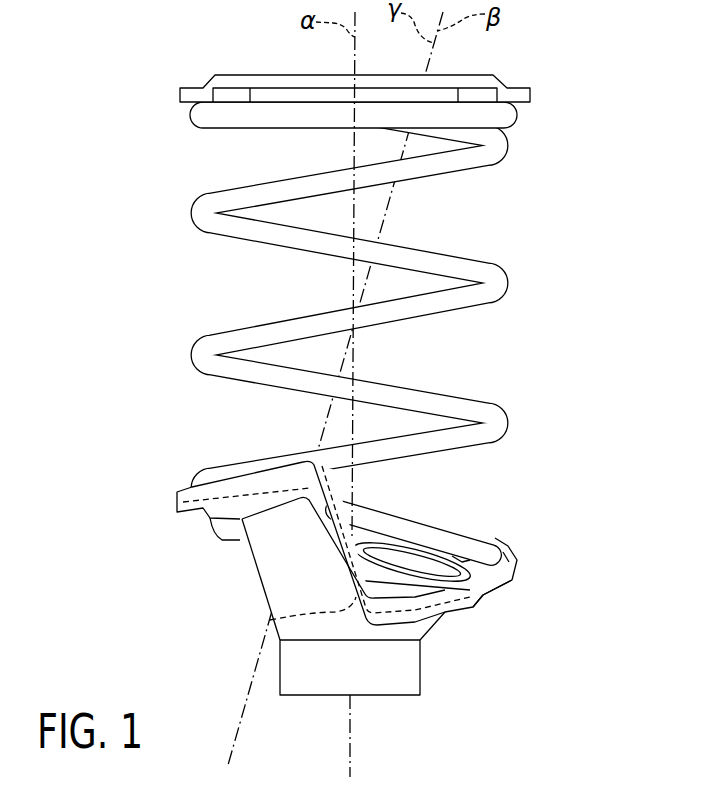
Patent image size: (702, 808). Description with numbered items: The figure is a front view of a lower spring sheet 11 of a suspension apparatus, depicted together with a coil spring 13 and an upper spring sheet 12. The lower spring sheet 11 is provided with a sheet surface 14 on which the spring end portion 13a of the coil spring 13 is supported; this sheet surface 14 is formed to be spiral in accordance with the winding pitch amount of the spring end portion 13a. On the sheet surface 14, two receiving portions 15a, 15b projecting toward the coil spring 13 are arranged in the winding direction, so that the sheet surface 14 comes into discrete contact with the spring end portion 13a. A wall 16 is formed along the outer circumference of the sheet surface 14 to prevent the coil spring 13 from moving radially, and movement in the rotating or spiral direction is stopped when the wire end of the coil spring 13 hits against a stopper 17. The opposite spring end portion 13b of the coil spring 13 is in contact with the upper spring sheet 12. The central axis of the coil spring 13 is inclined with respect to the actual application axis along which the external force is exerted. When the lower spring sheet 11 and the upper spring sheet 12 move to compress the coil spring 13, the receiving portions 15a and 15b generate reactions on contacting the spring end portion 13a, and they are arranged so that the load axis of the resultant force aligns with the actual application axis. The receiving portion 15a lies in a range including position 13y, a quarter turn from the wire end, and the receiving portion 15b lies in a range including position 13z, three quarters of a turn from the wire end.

The lower spring sheet 11 is at (267, 570).
The upper spring sheet 12 is at (477, 80).
The coil spring 13 is at (509, 286).
The spring end portion 13a is at (347, 550).
The spring end portion 13b is at (205, 115).
The position 13y is at (510, 553).
The position 13z is at (212, 476).
The sheet surface 14 is at (400, 533).
The receiving portion 15a is at (457, 560).
The receiving portion 15b is at (190, 488).
The wall 16 is at (523, 583).
The stopper 17 is at (270, 618).